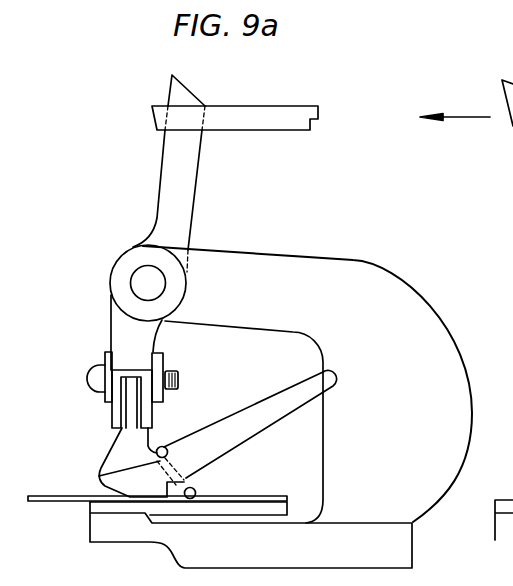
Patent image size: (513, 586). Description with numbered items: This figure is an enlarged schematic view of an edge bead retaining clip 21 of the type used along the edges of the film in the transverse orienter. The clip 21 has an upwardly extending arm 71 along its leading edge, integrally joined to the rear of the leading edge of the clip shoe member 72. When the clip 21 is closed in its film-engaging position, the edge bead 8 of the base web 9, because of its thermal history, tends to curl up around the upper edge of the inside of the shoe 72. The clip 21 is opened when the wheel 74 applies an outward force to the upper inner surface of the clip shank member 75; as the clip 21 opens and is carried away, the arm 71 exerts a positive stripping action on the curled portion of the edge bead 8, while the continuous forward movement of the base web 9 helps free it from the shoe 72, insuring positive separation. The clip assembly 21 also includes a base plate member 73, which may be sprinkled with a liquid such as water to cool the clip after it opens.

The wheel 74 is at (259, 115).
The clip shank member 75 is at (188, 190).
The edge bead retaining clip 21 is at (329, 244).
The clip shoe member 72 is at (108, 455).
The edge bead 8 is at (166, 445).
The upwardly extending arm 71 is at (245, 430).
The base plate member 73 is at (275, 502).
The base web 9 is at (60, 501).